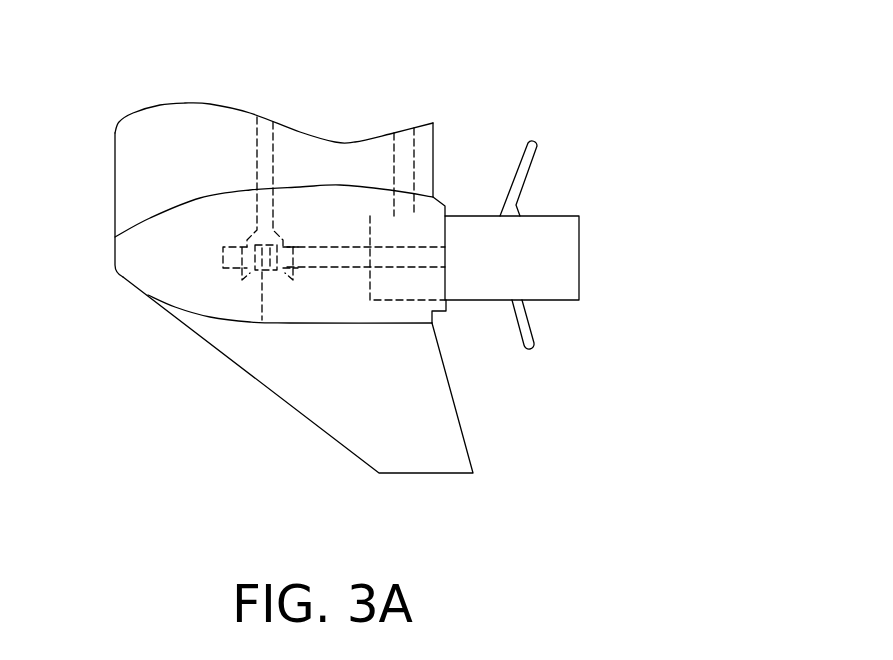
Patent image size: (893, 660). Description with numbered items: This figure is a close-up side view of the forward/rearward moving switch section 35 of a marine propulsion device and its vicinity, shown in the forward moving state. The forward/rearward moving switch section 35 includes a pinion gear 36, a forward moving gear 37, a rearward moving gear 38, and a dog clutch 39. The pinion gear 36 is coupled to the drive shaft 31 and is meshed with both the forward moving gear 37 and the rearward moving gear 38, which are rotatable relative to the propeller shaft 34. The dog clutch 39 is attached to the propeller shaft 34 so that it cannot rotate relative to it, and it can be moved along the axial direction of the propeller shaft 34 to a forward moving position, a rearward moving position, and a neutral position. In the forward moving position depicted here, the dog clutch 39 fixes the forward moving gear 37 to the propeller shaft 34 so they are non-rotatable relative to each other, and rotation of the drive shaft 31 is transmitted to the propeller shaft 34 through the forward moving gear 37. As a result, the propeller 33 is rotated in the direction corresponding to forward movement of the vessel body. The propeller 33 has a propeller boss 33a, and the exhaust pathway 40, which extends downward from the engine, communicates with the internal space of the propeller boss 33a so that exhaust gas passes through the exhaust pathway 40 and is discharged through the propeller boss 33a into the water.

The drive shaft 31 is at (248, 153).
The propeller 33 is at (475, 310).
The propeller boss 33a is at (402, 300).
The propeller shaft 34 is at (347, 245).
The forward/rearward moving switch section 35 is at (228, 278).
The pinion gear 36 is at (250, 237).
The forward moving gear 37 is at (237, 242).
The rearward moving gear 38 is at (297, 242).
The dog clutch 39 is at (262, 275).
The exhaust pathway 40 is at (413, 172).